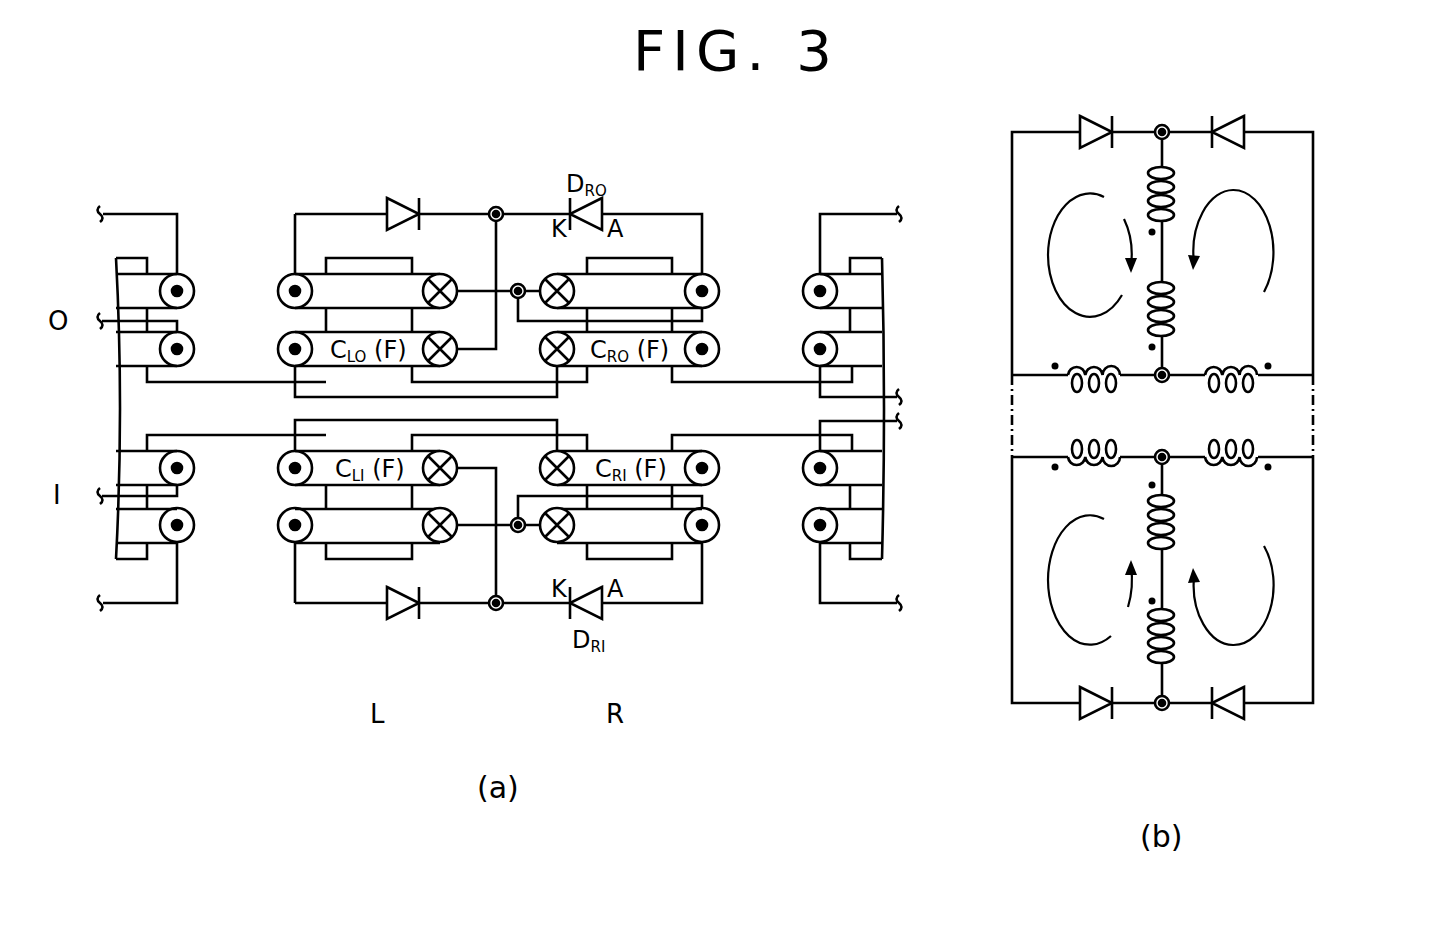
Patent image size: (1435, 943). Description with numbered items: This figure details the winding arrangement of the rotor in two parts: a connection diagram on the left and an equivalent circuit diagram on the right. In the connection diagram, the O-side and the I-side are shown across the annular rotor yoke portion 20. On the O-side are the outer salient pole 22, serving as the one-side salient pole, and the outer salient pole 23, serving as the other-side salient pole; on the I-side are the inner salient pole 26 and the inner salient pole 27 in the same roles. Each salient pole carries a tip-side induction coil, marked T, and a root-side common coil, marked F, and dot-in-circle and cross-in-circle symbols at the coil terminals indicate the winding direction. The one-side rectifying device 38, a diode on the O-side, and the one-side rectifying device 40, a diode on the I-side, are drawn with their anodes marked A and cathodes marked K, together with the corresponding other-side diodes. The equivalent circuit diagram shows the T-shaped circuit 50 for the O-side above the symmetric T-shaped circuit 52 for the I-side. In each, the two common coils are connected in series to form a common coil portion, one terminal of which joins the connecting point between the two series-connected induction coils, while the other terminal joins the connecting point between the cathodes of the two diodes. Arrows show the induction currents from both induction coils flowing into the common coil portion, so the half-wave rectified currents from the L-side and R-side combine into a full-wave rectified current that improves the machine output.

The annular rotor yoke portion 20 is at (145, 413).
The outer salient pole 22 is at (410, 264).
The outer salient pole 23 is at (630, 266).
The inner salient pole 26 is at (410, 552).
The inner salient pole 27 is at (630, 552).
The one-side rectifying device 38 is at (368, 193).
The one-side rectifying device 40 is at (368, 622).
The T-shaped circuit 50 is at (1334, 275).
The T-shaped circuit 52 is at (1334, 548).